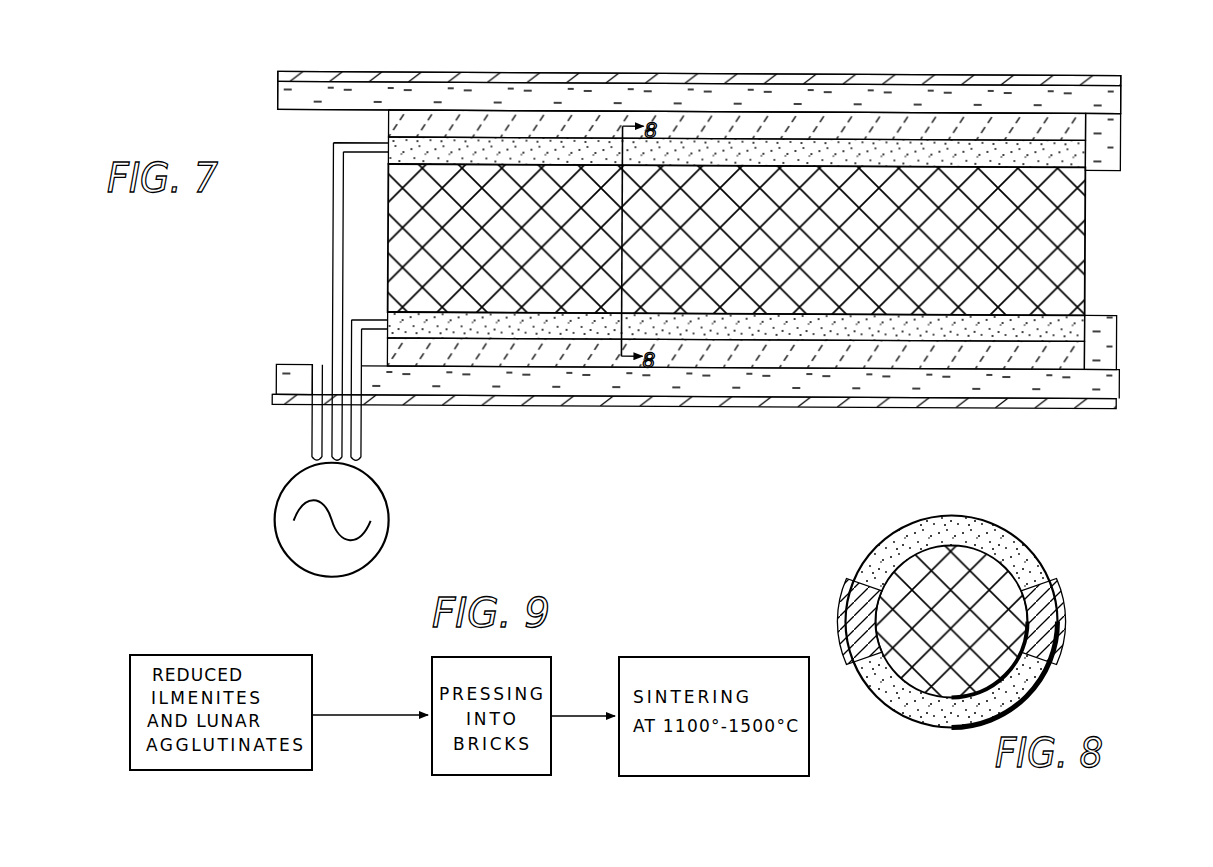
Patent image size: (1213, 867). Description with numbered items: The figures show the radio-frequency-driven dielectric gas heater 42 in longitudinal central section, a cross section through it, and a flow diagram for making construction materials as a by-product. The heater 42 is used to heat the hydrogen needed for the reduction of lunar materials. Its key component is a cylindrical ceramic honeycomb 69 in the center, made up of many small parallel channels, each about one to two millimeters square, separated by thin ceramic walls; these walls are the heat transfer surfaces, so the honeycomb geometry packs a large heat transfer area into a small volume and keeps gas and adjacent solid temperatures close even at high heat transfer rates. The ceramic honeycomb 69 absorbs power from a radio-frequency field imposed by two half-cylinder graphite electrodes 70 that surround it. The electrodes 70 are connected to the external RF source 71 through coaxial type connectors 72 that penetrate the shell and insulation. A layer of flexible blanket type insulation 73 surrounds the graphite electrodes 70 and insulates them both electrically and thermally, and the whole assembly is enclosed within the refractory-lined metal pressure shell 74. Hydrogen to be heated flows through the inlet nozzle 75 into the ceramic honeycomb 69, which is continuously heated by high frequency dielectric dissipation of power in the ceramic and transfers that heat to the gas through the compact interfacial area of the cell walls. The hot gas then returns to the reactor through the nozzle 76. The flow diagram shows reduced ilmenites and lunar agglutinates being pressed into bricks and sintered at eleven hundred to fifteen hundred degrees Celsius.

In FIG. 7, the radio-frequency-driven dielectric gas heater 42 is at (603, 58).
In FIG. 7, the cylindrical ceramic honeycomb 69 is at (1085, 230).
In FIG. 8, the cylindrical ceramic honeycomb 69 is at (878, 612).
In FIG. 7, the half-cylinder graphite electrodes 70 is at (1070, 322).
In FIG. 8, the half-cylinder graphite electrodes 70 is at (1045, 585).
In FIG. 7, the external RF source 71 is at (386, 534).
In FIG. 7, the coaxial type connectors 72 is at (365, 441).
In FIG. 7, the flexible blanket type insulation 73 is at (388, 128).
In FIG. 8, the flexible blanket type insulation 73 is at (1056, 625).
In FIG. 7, the refractory-lined metal pressure shell 74 is at (278, 100).
In FIG. 7, the inlet nozzle 75 is at (1100, 406).
In FIG. 7, the nozzle 76 is at (1120, 130).